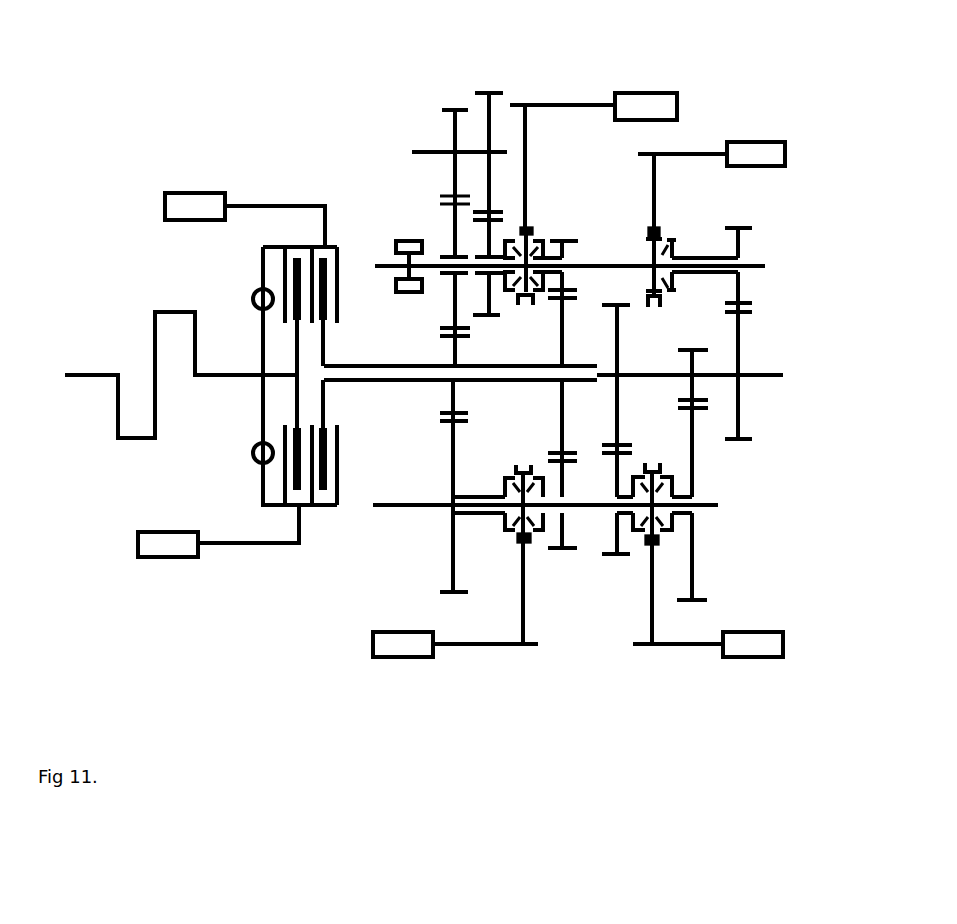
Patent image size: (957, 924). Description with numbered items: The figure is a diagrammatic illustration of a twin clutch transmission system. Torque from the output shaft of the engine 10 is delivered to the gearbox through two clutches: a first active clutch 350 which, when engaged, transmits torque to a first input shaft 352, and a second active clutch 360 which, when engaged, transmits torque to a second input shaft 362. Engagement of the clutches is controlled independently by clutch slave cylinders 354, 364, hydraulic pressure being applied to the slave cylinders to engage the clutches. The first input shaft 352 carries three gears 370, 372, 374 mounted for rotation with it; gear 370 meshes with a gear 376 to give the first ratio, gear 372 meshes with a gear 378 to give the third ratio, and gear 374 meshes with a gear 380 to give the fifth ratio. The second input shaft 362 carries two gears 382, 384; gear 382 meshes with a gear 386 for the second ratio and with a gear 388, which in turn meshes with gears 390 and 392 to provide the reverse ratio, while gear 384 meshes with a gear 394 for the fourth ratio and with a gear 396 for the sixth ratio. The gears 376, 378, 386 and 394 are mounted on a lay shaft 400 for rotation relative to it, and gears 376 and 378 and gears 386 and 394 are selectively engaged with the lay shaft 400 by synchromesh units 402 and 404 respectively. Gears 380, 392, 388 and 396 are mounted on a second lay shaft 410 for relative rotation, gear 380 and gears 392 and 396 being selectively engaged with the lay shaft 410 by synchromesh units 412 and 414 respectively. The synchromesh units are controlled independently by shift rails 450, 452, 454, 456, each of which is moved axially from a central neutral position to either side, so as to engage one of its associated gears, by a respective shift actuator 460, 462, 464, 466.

The engine 10 is at (155, 372).
The first active clutch 350 is at (297, 270).
The first input shaft 352 is at (776, 373).
The clutch slave cylinder 354 is at (146, 553).
The second active clutch 360 is at (323, 490).
The second input shaft 362 is at (405, 383).
The clutch slave cylinder 364 is at (175, 203).
The gear 370 is at (690, 348).
The gear 372 is at (618, 395).
The gear 374 is at (745, 442).
The gear 376 is at (695, 560).
The gear 378 is at (616, 560).
The gear 380 is at (742, 226).
The gear 382 is at (451, 357).
The gear 384 is at (560, 398).
The gear 386 is at (450, 540).
The gear 388 is at (452, 230).
The gear 390 is at (450, 108).
The gear 392 is at (486, 93).
The gear 394 is at (562, 552).
The gear 396 is at (565, 240).
The lay shaft 400 is at (720, 507).
The synchromesh unit 402 is at (646, 530).
The synchromesh unit 404 is at (505, 490).
The lay shaft 410 is at (765, 264).
The synchromesh unit 412 is at (662, 229).
The synchromesh unit 414 is at (530, 227).
The shift rail 450 is at (672, 647).
The shift rail 452 is at (685, 153).
The shift rail 454 is at (490, 647).
The shift rail 456 is at (557, 105).
The shift actuator 460 is at (765, 656).
The shift actuator 462 is at (770, 141).
The shift actuator 464 is at (390, 656).
The shift actuator 466 is at (653, 103).